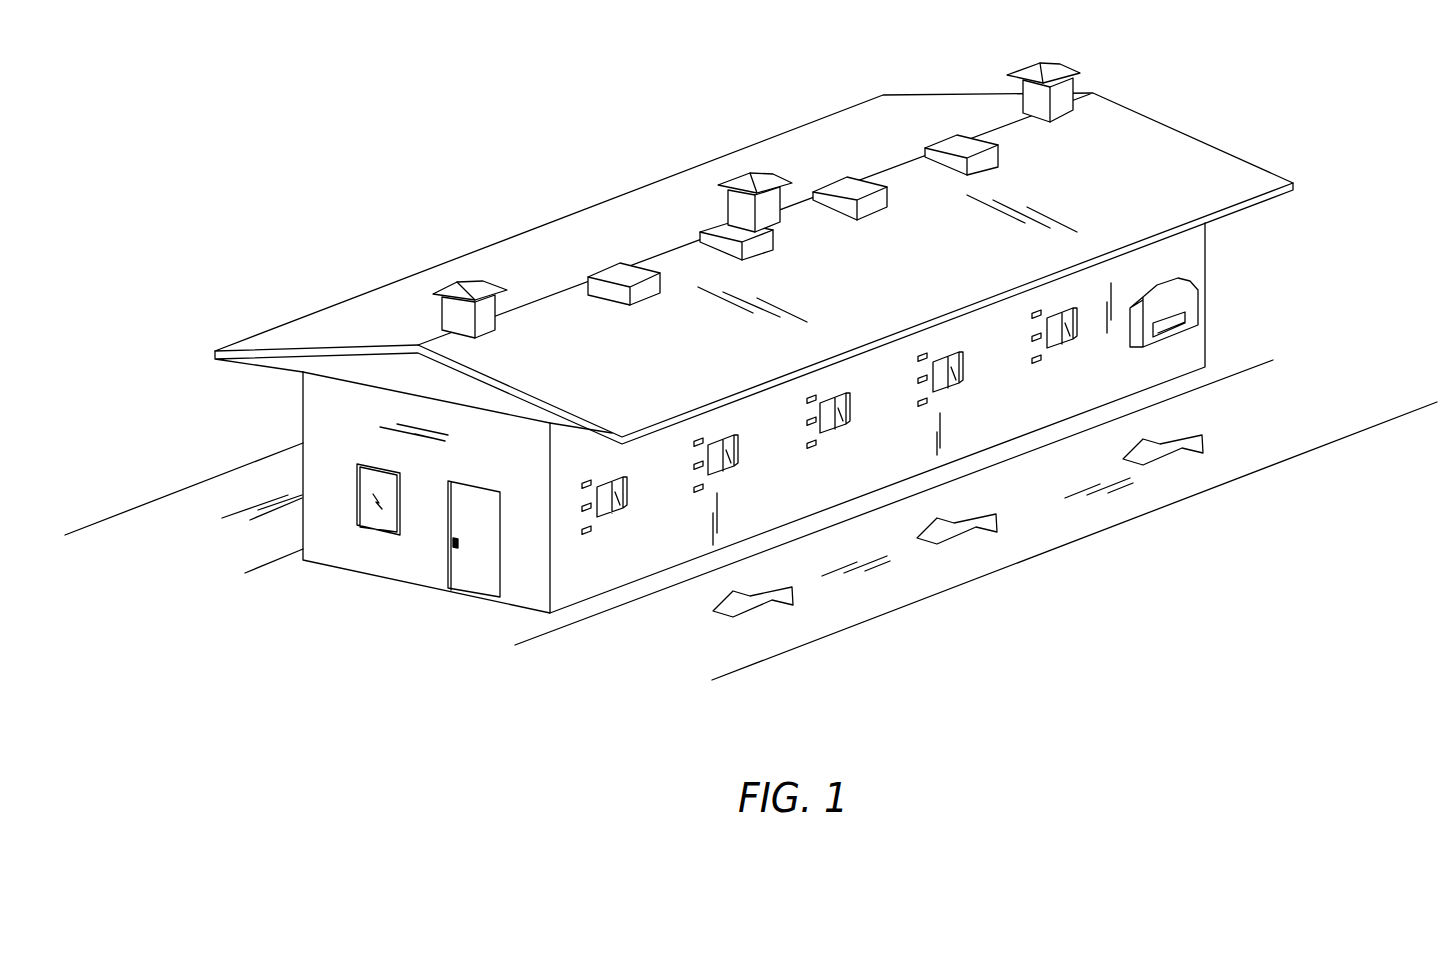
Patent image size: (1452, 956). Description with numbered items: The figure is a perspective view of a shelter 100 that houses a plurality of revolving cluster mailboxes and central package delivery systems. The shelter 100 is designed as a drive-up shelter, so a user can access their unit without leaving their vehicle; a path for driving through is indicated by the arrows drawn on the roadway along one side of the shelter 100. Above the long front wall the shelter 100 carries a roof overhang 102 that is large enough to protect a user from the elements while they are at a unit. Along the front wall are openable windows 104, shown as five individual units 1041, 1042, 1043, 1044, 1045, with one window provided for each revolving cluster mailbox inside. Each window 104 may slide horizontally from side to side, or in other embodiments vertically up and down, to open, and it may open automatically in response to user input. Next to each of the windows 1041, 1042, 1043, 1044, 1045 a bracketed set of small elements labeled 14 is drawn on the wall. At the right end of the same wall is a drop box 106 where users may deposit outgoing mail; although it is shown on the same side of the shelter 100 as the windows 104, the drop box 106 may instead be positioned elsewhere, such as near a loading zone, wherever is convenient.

The shelter 100 is at (308, 214).
The roof overhang 102 is at (758, 386).
The sensor set 14 is at (572, 465).
The openable window 104 is at (862, 438).
The openable window 1041 is at (620, 508).
The openable window 1042 is at (731, 466).
The openable window 1043 is at (846, 424).
The openable window 1044 is at (959, 383).
The openable window 1045 is at (1070, 336).
The drop box 106 is at (1190, 305).